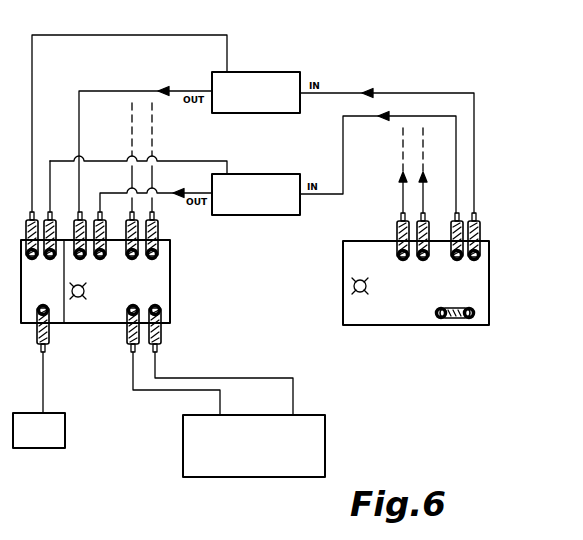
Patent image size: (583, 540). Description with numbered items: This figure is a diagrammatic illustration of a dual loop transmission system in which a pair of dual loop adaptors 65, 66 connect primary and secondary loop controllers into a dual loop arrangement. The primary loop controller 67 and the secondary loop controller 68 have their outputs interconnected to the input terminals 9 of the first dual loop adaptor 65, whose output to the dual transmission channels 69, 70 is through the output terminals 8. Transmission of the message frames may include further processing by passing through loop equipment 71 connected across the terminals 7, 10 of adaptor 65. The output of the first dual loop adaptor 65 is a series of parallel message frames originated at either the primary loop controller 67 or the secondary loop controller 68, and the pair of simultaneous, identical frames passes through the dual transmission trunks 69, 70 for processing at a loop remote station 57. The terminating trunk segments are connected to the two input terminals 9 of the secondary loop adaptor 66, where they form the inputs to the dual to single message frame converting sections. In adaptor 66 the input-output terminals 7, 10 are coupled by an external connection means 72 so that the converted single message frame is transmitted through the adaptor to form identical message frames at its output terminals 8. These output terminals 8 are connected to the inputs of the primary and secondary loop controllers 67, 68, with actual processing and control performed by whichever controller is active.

The input-output terminal 7 is at (162, 312).
The output terminal 8 is at (147, 258).
The input terminal 9 is at (87, 258).
The input-output terminal 10 is at (123, 323).
The remote station 57 is at (33, 377).
The dual loop adaptor 65 is at (170, 290).
The dual loop adaptor 66 is at (343, 268).
The primary loop controller 67 is at (281, 113).
The secondary loop controller 68 is at (282, 167).
The dual transmission channel 69 is at (130, 170).
The dual transmission channel 70 is at (154, 170).
The loop equipment 71 is at (325, 440).
The external connection means 72 is at (458, 318).